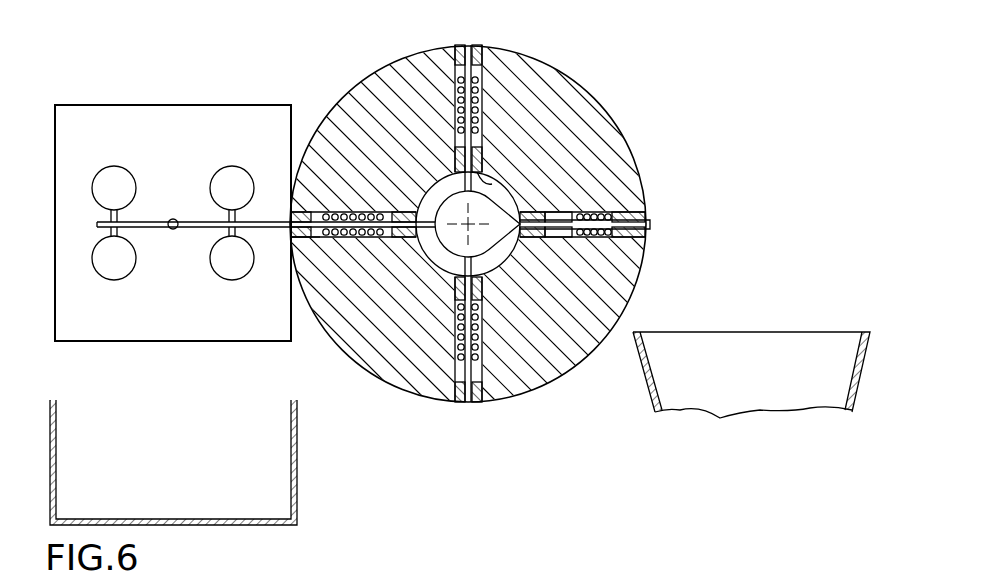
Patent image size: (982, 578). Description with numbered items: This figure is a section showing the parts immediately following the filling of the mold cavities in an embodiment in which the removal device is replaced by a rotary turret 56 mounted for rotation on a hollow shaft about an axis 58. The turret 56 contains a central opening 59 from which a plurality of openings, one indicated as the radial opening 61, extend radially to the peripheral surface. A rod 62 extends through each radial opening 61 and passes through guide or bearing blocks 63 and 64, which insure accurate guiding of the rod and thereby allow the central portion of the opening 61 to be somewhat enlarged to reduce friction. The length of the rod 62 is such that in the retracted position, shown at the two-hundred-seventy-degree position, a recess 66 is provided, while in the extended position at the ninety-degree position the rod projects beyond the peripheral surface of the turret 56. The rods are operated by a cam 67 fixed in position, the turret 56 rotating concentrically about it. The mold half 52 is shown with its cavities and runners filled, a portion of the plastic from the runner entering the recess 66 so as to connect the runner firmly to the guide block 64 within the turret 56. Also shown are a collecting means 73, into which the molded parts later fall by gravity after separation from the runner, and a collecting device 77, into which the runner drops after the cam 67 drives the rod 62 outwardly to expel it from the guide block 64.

The mold half 52 is at (203, 105).
The rotary turret 56 is at (510, 70).
The axis 58 is at (484, 196).
The central opening 59 is at (503, 180).
The radial opening 61 is at (360, 214).
The rod 62 is at (315, 214).
The guide block 63 is at (405, 214).
The guide block 64 is at (308, 262).
The recess 66 is at (292, 220).
The cam 67 is at (492, 185).
The collecting means 73 is at (295, 455).
The collecting device 77 is at (642, 372).